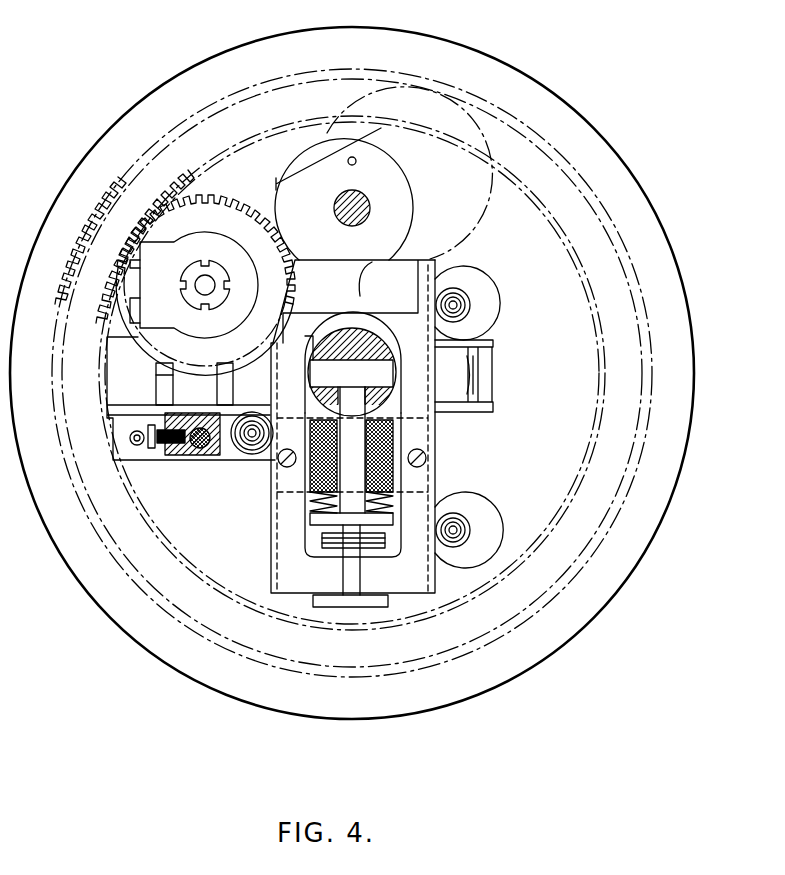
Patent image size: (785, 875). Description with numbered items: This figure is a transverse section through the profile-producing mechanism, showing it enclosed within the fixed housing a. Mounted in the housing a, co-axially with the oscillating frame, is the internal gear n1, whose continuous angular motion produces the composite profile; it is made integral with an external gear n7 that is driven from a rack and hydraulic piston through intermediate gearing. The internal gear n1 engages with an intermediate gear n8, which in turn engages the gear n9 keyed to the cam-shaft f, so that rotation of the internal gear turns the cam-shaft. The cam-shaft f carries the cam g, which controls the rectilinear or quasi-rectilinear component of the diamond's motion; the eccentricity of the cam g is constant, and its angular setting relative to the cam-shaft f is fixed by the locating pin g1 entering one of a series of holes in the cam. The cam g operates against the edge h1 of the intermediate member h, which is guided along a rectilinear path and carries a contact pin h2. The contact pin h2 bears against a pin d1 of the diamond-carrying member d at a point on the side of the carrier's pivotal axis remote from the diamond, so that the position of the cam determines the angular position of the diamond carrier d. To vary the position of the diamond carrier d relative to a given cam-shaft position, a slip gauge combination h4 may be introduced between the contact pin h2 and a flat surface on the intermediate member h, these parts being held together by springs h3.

The fixed housing a is at (557, 99).
The external gear n7 is at (110, 190).
The internal gear n1 is at (180, 180).
The intermediate gear n8 is at (219, 213).
The cam g is at (315, 167).
The cam-shaft f is at (338, 190).
The locating pin g1 is at (357, 161).
The gear n9 is at (438, 214).
The edge of intermediate member h1 is at (354, 301).
The intermediate member h is at (415, 366).
The diamond-carrying member d is at (352, 338).
The pin d1 is at (380, 371).
The contact pin h2 is at (352, 416).
The springs h3 is at (370, 505).
The slip gauge combination h4 is at (322, 545).